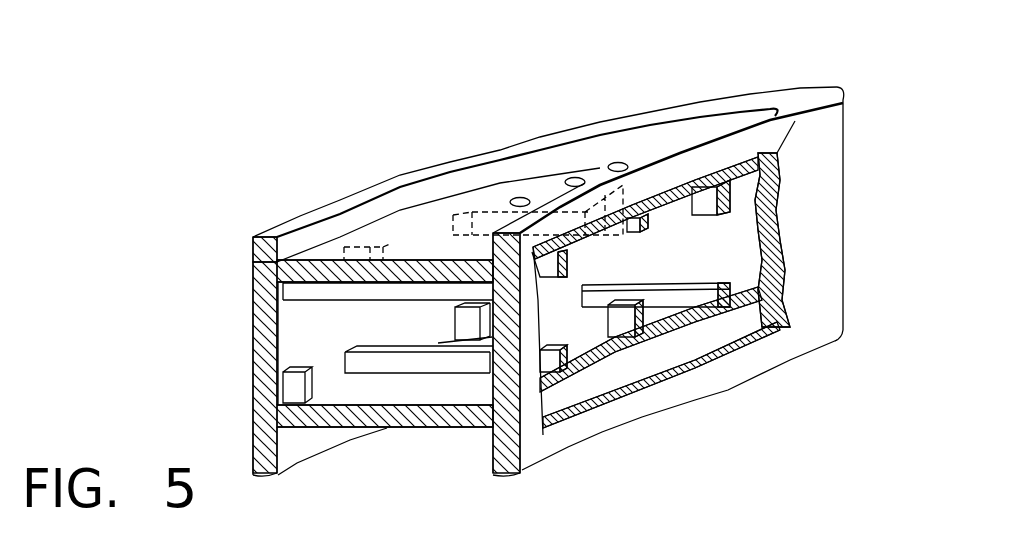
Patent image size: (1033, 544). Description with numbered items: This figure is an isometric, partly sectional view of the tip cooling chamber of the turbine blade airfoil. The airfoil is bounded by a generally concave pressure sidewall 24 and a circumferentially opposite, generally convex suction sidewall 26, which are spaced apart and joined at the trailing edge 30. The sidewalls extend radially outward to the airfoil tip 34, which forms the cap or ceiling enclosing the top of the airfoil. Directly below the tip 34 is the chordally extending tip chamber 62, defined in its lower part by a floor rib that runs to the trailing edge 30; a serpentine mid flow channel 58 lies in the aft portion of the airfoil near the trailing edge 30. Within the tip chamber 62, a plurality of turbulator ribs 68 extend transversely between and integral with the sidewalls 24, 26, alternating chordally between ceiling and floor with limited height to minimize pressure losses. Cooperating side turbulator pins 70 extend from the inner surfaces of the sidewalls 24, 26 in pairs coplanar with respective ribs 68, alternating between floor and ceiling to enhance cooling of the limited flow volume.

The pressure sidewall 24 is at (728, 365).
The suction sidewall 26 is at (253, 326).
The trailing edge 30 is at (843, 163).
The airfoil tip 34 is at (653, 113).
The serpentine mid flow channel 58 is at (427, 462).
The tip chamber 62 is at (348, 333).
The turbulator ribs 68 is at (383, 302).
The side turbulator pins 70 is at (312, 382).